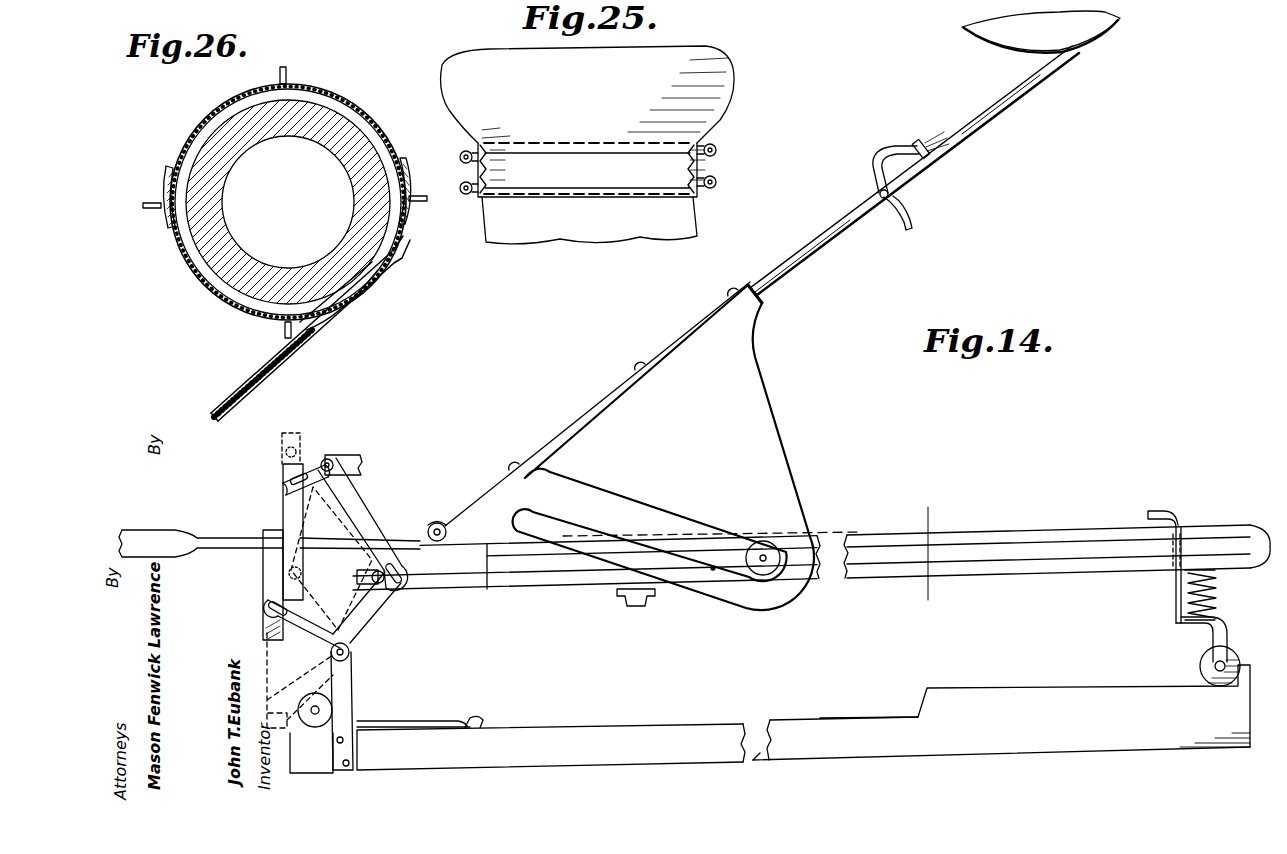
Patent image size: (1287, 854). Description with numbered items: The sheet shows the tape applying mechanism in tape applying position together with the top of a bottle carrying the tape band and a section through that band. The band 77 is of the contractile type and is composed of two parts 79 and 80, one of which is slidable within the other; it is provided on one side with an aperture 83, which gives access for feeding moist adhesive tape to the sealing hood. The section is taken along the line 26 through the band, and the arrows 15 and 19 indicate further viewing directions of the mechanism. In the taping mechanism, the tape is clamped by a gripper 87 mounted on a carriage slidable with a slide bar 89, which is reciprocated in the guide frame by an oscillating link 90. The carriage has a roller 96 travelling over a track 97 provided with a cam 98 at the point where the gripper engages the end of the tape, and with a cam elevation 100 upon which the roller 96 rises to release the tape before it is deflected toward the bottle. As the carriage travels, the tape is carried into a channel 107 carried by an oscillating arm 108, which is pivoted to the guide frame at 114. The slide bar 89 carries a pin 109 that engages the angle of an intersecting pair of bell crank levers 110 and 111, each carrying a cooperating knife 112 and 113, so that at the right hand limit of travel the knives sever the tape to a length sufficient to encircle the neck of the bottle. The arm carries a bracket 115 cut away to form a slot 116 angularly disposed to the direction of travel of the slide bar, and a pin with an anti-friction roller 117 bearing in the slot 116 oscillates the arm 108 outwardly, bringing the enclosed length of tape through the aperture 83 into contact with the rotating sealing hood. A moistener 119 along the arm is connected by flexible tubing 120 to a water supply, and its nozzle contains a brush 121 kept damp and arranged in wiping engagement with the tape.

In FIG. 14, the section view arrow 15 is at (196, 578).
In FIG. 14, the section line / rail bar 19 is at (932, 554).
In FIG. 25, the section line indicator 26 is at (448, 178).
In FIG. 26, the band 77 is at (363, 104).
In FIG. 25, the band 77 is at (470, 150).
In FIG. 26, the band part 79 is at (188, 138).
In FIG. 25, the band part 79 is at (478, 200).
In FIG. 14, the band part 79 is at (975, 42).
In FIG. 26, the band part 80 is at (176, 256).
In FIG. 25, the band part 80 is at (718, 160).
In FIG. 26, the aperture 83 is at (318, 320).
In FIG. 14, the gripper 87 is at (1166, 519).
In FIG. 14, the slide bar 89 is at (885, 528).
In FIG. 14, the oscillating link 90 is at (612, 598).
In FIG. 14, the roller 96 is at (1208, 660).
In FIG. 14, the track 97 is at (606, 740).
In FIG. 14, the cam 98 is at (420, 720).
In FIG. 14, the cam elevation 100 is at (912, 690).
In FIG. 26, the channel 107 is at (210, 419).
In FIG. 14, the oscillating arm 108 is at (646, 372).
In FIG. 14, the pin 109 is at (355, 574).
In FIG. 14, the bell crank lever 110 is at (355, 498).
In FIG. 14, the bell crank lever 111 is at (368, 636).
In FIG. 14, the knife 112 is at (283, 503).
In FIG. 14, the knife 113 is at (272, 560).
In FIG. 14, the pivot 114 is at (437, 523).
In FIG. 14, the bracket 115 is at (752, 418).
In FIG. 14, the slot 116 is at (720, 572).
In FIG. 14, the roller 117 is at (772, 545).
In FIG. 14, the moistener 119 is at (866, 163).
In FIG. 14, the flexible tubing 120 is at (914, 208).
In FIG. 14, the brush 121 is at (905, 122).